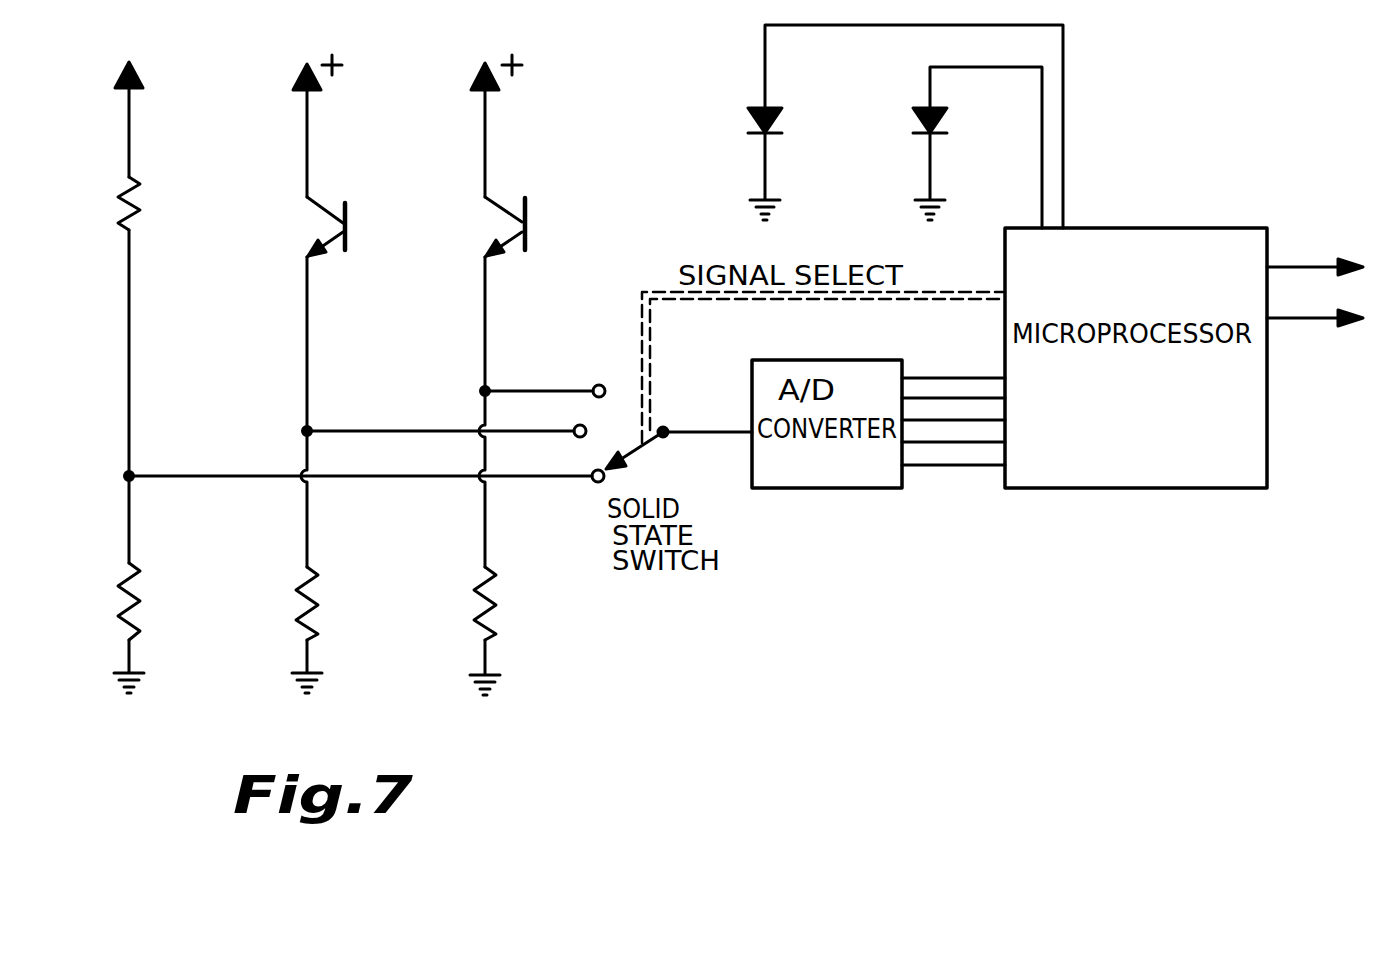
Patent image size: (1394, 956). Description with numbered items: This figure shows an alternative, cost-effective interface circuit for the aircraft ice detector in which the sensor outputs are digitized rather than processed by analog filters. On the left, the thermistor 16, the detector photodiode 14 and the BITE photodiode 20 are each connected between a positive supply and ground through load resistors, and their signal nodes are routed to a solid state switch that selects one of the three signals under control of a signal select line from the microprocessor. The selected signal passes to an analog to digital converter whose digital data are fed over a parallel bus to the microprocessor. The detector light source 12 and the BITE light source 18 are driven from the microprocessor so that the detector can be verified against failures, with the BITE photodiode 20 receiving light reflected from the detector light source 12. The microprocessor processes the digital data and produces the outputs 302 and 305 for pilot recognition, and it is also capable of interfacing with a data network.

The detector light source 12 is at (905, 126).
The photodetector 14 is at (387, 255).
The thermistor 16 is at (206, 146).
The BITE light source 18 is at (977, 147).
The BITE photodetector 20 is at (583, 241).
The output 302 is at (1302, 265).
The microprocessor output 305 is at (1302, 320).